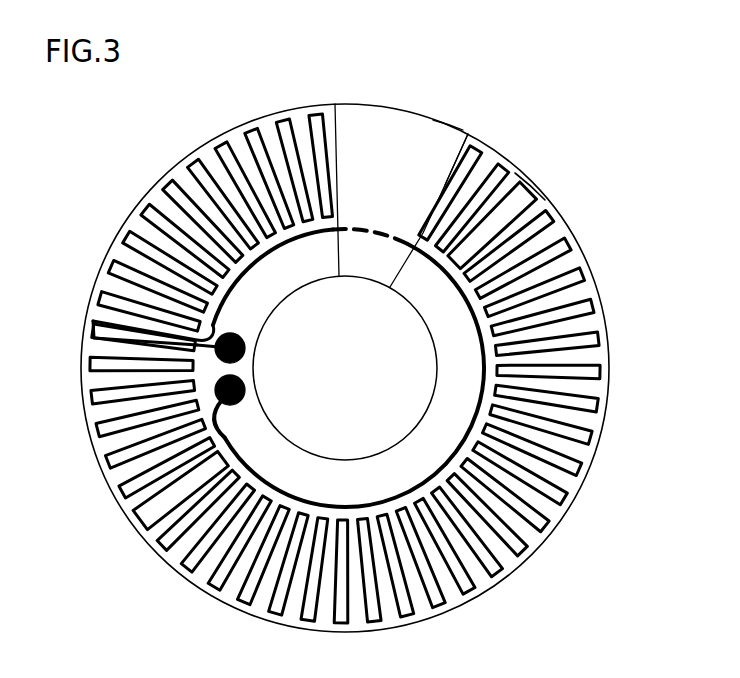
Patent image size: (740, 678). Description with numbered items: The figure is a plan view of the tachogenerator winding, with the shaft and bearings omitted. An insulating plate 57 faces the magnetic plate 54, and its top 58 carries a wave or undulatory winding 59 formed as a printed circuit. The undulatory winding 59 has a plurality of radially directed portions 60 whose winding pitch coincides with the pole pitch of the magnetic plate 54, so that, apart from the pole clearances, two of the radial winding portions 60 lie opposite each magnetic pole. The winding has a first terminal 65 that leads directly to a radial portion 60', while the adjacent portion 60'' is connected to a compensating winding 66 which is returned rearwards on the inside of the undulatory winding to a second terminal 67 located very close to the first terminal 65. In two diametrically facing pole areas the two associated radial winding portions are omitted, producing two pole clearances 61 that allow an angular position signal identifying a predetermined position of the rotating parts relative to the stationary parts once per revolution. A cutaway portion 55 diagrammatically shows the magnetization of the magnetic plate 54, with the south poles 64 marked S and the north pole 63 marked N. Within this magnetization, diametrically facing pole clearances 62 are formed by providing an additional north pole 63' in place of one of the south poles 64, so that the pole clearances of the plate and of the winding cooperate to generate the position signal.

The magnetic plate 54 is at (358, 231).
The cutaway portion 55 is at (489, 88).
The insulating plate 57 is at (153, 168).
The top of plate 58 is at (521, 171).
The undulatory winding 59 is at (600, 332).
The radial winding portions 60 is at (574, 388).
The radial portion 60' is at (125, 319).
The radial portion 60'' is at (126, 289).
The pole clearances 61 is at (535, 213).
The pole clearances 62 is at (387, 112).
The north pole 63 is at (358, 135).
The additional north pole 63' is at (414, 142).
The south poles 64 is at (435, 119).
The first terminal 65 is at (244, 350).
The compensating winding 66 is at (272, 250).
The second terminal 67 is at (244, 391).